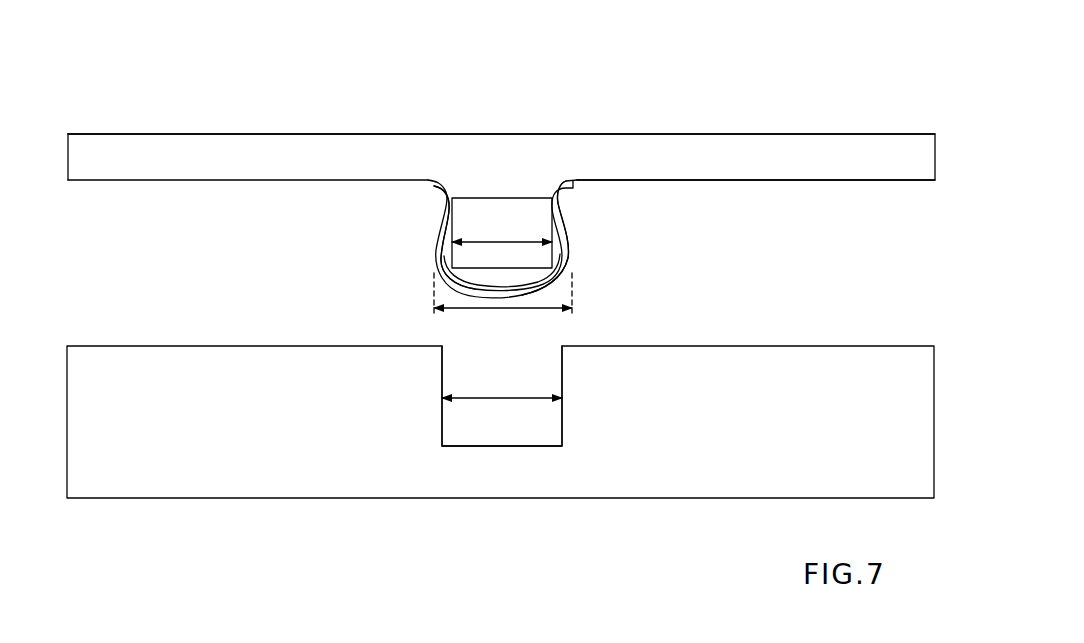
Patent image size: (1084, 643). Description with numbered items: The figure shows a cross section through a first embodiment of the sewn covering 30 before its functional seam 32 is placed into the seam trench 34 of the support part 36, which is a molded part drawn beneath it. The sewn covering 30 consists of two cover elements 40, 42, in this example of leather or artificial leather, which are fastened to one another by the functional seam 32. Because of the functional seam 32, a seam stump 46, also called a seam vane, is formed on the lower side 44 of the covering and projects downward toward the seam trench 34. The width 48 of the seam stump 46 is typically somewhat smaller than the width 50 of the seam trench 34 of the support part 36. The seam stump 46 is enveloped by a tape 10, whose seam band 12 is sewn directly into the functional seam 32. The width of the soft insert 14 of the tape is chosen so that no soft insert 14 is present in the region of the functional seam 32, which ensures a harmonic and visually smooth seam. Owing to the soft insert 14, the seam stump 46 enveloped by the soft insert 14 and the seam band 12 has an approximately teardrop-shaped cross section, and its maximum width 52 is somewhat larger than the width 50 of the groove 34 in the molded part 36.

The tape 10 is at (569, 218).
The seam band 12 is at (563, 181).
The soft insert 14 is at (473, 282).
The sewn covering 30 is at (96, 110).
The functional seam 32 is at (525, 196).
The seam trench 34 is at (439, 409).
The support part 36 is at (110, 337).
The cover element 40 is at (832, 152).
The cover element 42 is at (175, 156).
The lower side 44 is at (833, 184).
The seam stump 46 is at (453, 256).
The width of the seam stump 48 is at (488, 239).
The width of the seam trench 50 is at (538, 394).
The maximum width of the seam stump 52 is at (540, 309).